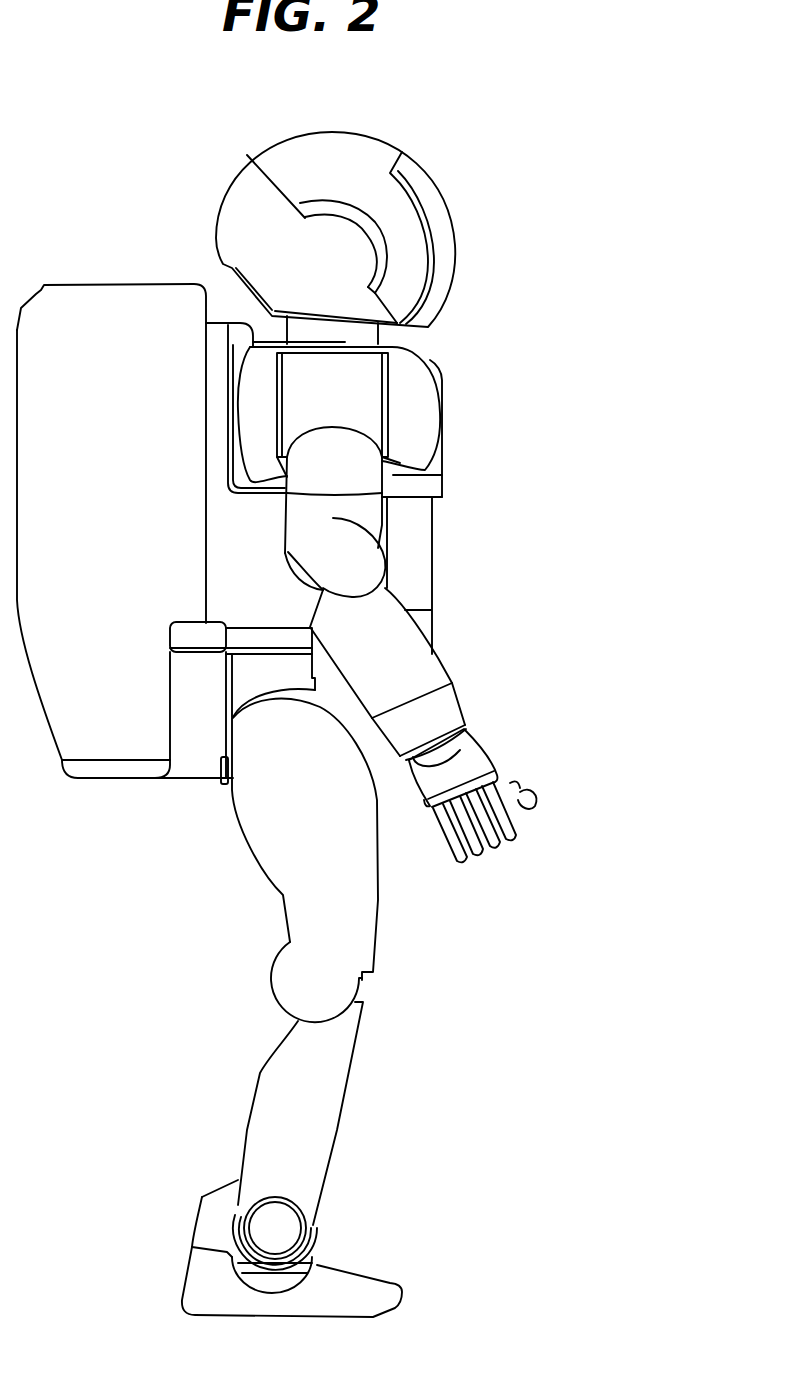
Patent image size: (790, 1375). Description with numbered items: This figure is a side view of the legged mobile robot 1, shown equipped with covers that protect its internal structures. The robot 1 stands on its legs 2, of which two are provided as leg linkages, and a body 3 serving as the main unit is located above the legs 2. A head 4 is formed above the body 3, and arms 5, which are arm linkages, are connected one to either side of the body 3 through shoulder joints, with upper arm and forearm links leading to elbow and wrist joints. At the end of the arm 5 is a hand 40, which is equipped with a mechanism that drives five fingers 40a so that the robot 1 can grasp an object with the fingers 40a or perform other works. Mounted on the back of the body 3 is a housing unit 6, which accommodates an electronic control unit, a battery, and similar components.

The legged mobile robot 1 is at (487, 401).
The leg 2 is at (398, 993).
The body 3 is at (418, 555).
The head 4 is at (284, 133).
The arm 5 is at (458, 668).
The housing unit 6 is at (78, 282).
The hand 40 is at (492, 745).
The fingers 40a is at (528, 822).